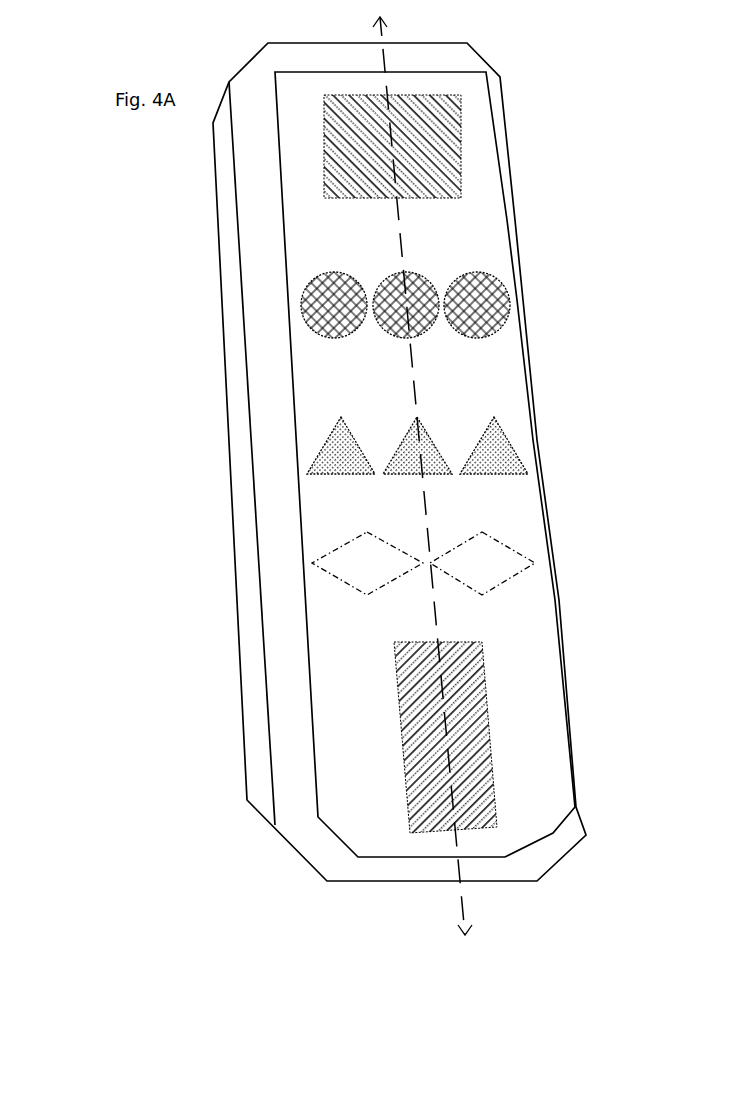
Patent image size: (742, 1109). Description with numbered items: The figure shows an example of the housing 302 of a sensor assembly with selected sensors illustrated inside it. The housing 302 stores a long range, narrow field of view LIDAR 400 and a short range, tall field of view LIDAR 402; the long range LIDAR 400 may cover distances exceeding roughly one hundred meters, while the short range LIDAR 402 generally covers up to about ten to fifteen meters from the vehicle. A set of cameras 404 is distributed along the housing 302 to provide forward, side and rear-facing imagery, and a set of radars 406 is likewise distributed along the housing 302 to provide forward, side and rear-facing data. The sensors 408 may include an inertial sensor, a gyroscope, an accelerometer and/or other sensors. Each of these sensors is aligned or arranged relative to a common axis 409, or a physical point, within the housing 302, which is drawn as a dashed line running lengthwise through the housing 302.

The housing 302 is at (568, 70).
The long range, narrow field of view LIDAR 400 is at (461, 140).
The short range, tall field of view LIDAR 402 is at (490, 740).
The set of cameras 404 is at (510, 305).
The set of radars 406 is at (503, 436).
The sensors 408 is at (517, 556).
The common axis 409 is at (418, 610).